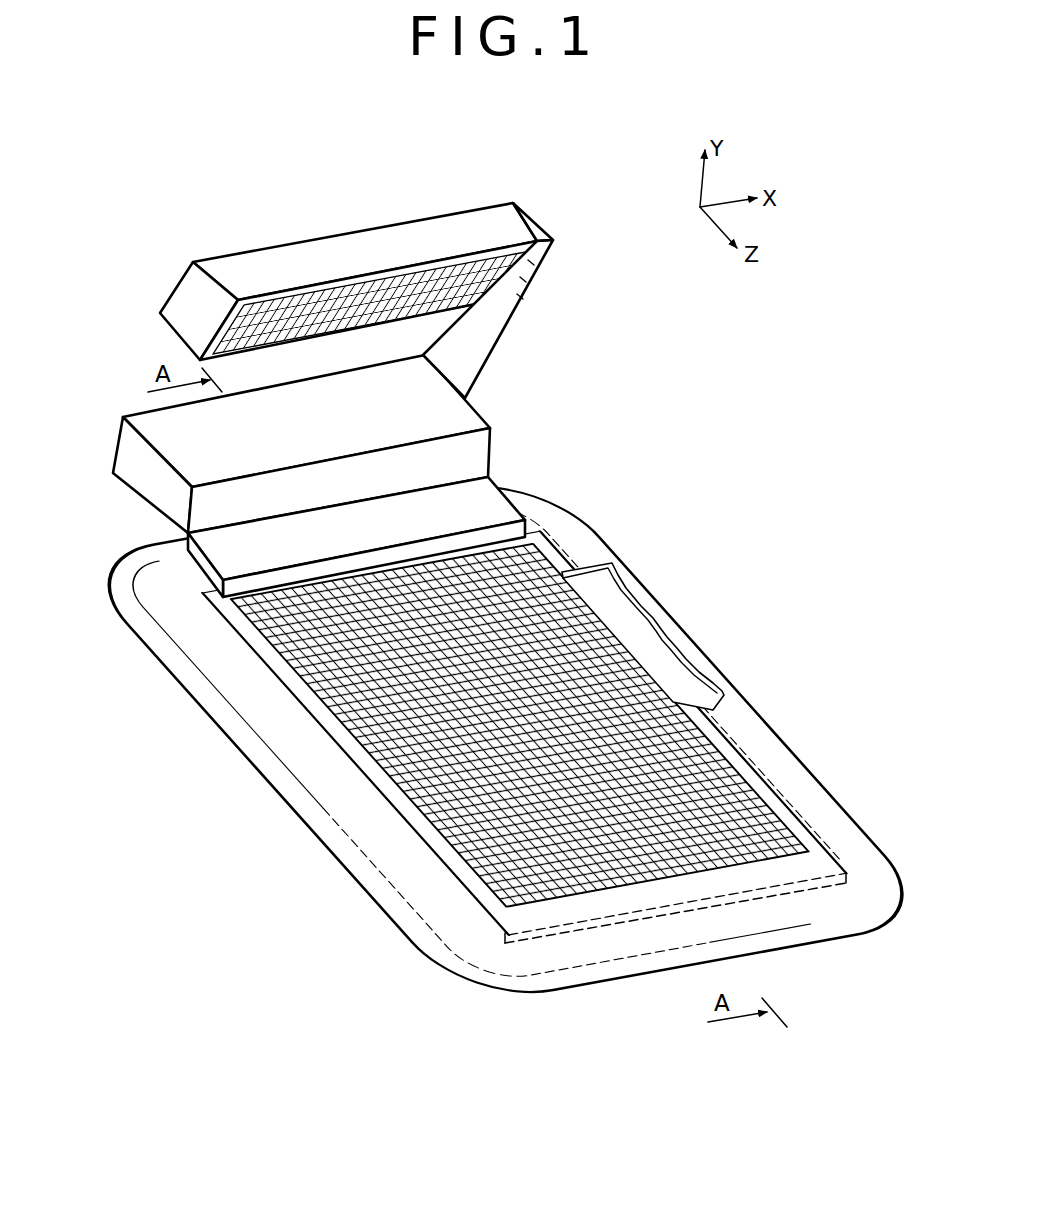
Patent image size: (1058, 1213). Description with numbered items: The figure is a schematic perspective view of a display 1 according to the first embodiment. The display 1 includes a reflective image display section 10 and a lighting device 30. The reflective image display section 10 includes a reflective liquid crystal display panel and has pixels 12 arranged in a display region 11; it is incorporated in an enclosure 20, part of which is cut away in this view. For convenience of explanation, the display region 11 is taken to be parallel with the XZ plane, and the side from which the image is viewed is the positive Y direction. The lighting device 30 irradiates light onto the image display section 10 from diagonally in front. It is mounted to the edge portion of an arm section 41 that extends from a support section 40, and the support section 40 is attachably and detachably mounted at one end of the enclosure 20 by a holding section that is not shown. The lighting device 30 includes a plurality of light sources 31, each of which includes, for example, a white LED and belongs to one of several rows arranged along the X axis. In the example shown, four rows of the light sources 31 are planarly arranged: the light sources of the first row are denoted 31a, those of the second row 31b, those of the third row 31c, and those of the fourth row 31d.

The display 1 is at (733, 403).
The reflective image display section 10 is at (597, 597).
The display region 11 is at (637, 662).
The pixels 12 is at (683, 733).
The enclosure 20 is at (590, 557).
The lighting device 30 is at (278, 252).
The light sources 31 is at (335, 290).
The light sources of the first row 31a is at (540, 248).
The light sources of the second row 31b is at (530, 263).
The light sources of the third row 31c is at (522, 280).
The light sources of the fourth row 31d is at (520, 297).
The support section 40 is at (480, 463).
The arm section 41 is at (467, 371).